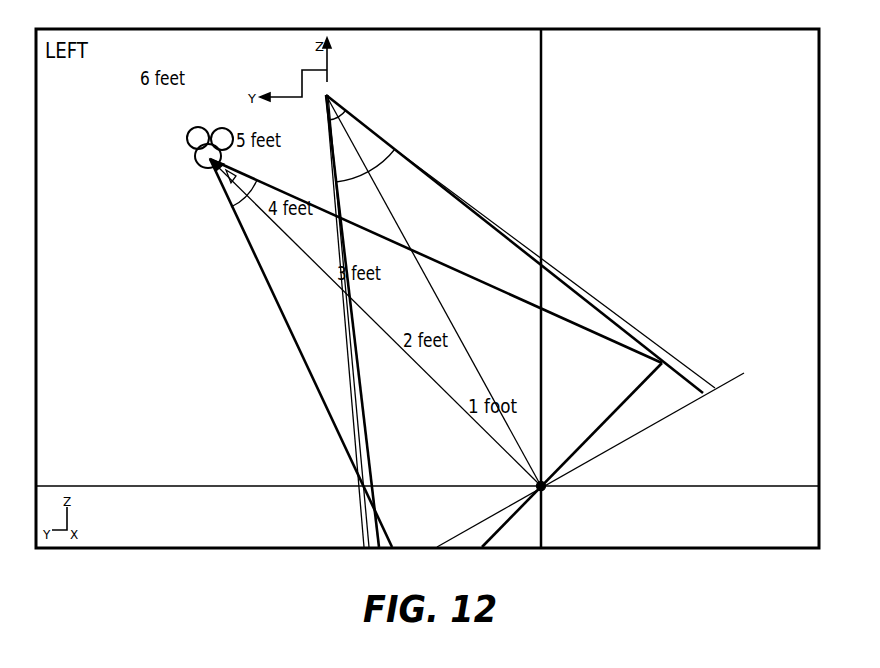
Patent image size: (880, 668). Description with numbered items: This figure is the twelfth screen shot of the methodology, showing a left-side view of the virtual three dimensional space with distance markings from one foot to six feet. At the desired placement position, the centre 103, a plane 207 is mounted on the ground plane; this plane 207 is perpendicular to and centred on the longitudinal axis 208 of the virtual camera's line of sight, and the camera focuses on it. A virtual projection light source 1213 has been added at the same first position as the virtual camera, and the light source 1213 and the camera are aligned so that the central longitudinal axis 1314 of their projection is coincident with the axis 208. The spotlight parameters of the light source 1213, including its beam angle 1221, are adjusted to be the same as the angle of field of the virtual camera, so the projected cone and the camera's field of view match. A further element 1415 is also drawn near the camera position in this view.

The virtual projection light source 1213 is at (338, 103).
The beam angle 1221 is at (404, 160).
The central longitudinal axis 1314 is at (427, 283).
The eye tracking device field of view 1415 is at (238, 208).
The longitudinal axis 208 is at (307, 255).
The plane 207 is at (592, 435).
The centre 103 is at (547, 488).